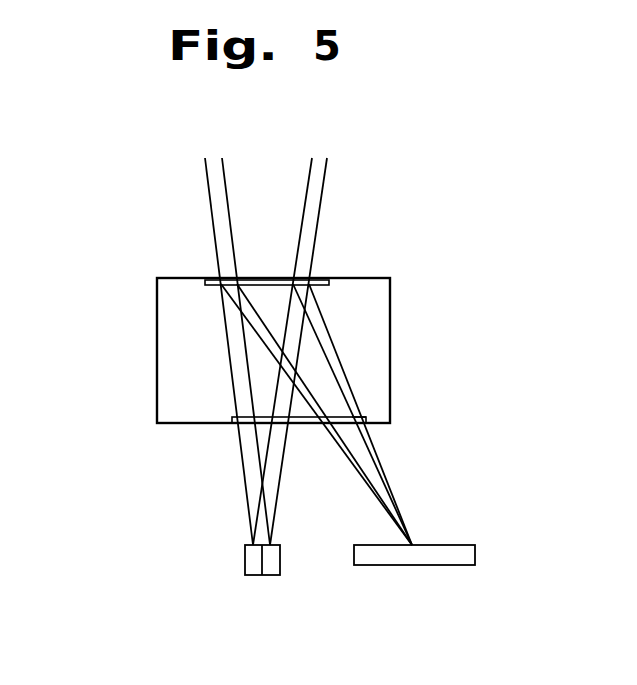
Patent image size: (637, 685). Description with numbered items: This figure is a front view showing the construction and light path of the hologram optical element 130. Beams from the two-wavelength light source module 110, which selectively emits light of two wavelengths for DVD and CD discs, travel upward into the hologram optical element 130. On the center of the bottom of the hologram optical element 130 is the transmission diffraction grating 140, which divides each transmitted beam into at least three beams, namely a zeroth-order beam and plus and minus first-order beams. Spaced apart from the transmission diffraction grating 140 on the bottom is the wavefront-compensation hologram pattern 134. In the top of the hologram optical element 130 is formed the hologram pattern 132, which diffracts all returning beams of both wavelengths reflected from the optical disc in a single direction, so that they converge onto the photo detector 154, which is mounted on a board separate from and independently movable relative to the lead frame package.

The two-wavelength light source module 110 is at (252, 575).
The hologram optical element 130 is at (170, 351).
The hologram pattern 132 is at (210, 284).
The wavefront-compensation hologram pattern 134 is at (348, 418).
The transmission diffraction grating 140 is at (245, 417).
The photo detector 154 is at (412, 567).